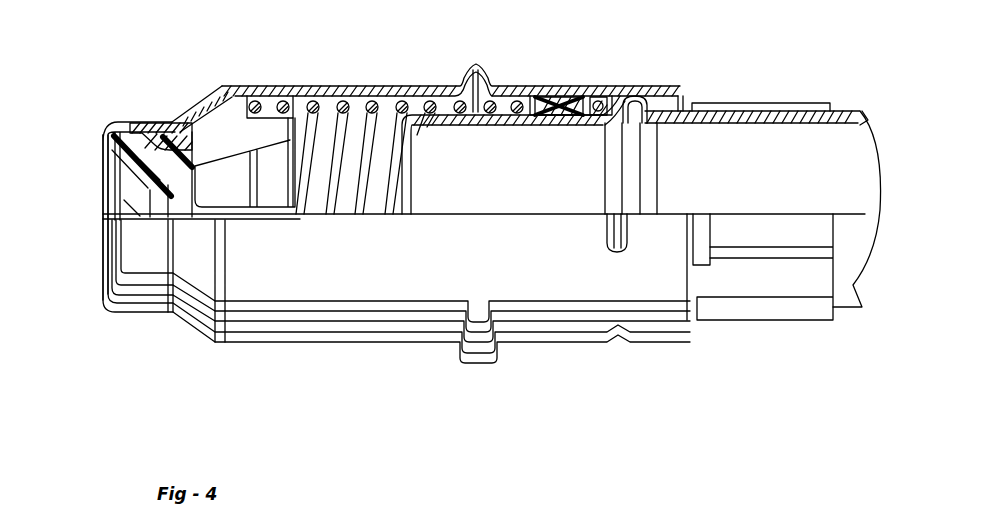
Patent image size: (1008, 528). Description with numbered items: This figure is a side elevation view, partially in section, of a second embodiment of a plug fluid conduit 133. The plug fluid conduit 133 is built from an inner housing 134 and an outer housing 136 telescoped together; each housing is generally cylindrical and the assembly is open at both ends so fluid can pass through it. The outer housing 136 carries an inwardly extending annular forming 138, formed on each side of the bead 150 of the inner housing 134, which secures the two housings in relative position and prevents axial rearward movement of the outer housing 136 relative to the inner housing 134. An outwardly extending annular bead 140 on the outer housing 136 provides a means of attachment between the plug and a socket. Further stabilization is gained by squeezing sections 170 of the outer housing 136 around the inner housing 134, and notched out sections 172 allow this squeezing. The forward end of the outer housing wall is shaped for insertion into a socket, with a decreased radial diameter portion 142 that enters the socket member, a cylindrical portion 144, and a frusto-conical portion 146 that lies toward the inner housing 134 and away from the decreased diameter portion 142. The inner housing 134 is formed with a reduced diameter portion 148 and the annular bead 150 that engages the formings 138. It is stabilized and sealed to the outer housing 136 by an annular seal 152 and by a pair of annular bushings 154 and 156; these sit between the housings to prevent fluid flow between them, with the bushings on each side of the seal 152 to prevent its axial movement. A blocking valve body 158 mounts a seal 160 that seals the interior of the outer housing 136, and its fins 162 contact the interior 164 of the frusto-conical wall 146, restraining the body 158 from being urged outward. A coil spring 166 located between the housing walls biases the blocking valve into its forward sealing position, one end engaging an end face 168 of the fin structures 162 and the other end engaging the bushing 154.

The plug fluid conduit 133 is at (440, 414).
The inner housing 134 is at (847, 112).
The outer housing 136 is at (418, 88).
The annular forming 138 is at (613, 86).
The annular bead 140 is at (474, 65).
The decreased radial diameter portion 142 is at (106, 134).
The cylindrical portion 144 is at (140, 306).
The frusto-conical portion 146 is at (197, 318).
The reduced diameter portion 148 is at (398, 124).
The annular bead 150 is at (641, 95).
The annular seal 152 is at (563, 112).
The annular bushing 154 is at (533, 125).
The annular bushing 156 is at (597, 112).
The blocking valve body 158 is at (134, 207).
The seal 160 is at (145, 140).
The fins 162 is at (230, 112).
The interior of frusto-conical wall 164 is at (196, 103).
The coil spring 166 is at (291, 96).
The end face 168 is at (264, 90).
The sections 170 is at (750, 103).
The notched out sections 172 is at (685, 262).